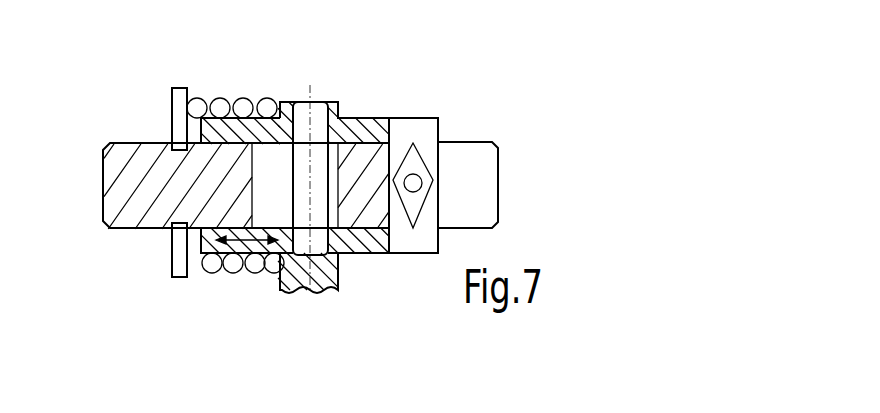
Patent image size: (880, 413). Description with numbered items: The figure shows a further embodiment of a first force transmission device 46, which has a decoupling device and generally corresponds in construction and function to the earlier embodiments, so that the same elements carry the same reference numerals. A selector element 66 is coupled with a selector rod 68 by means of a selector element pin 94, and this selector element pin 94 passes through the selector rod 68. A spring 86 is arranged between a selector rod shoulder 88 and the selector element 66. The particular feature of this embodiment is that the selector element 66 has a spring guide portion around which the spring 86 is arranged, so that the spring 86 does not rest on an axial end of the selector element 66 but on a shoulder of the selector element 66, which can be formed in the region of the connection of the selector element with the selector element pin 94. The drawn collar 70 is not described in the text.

The selector rod 68 is at (147, 185).
The selector rod shoulder 88 is at (176, 115).
The spring 86 is at (218, 104).
The selector element 66 is at (290, 0).
The selector element pin 94 is at (320, 103).
The collar 70 is at (407, 132).
The first force transmission device 46 is at (453, 108).